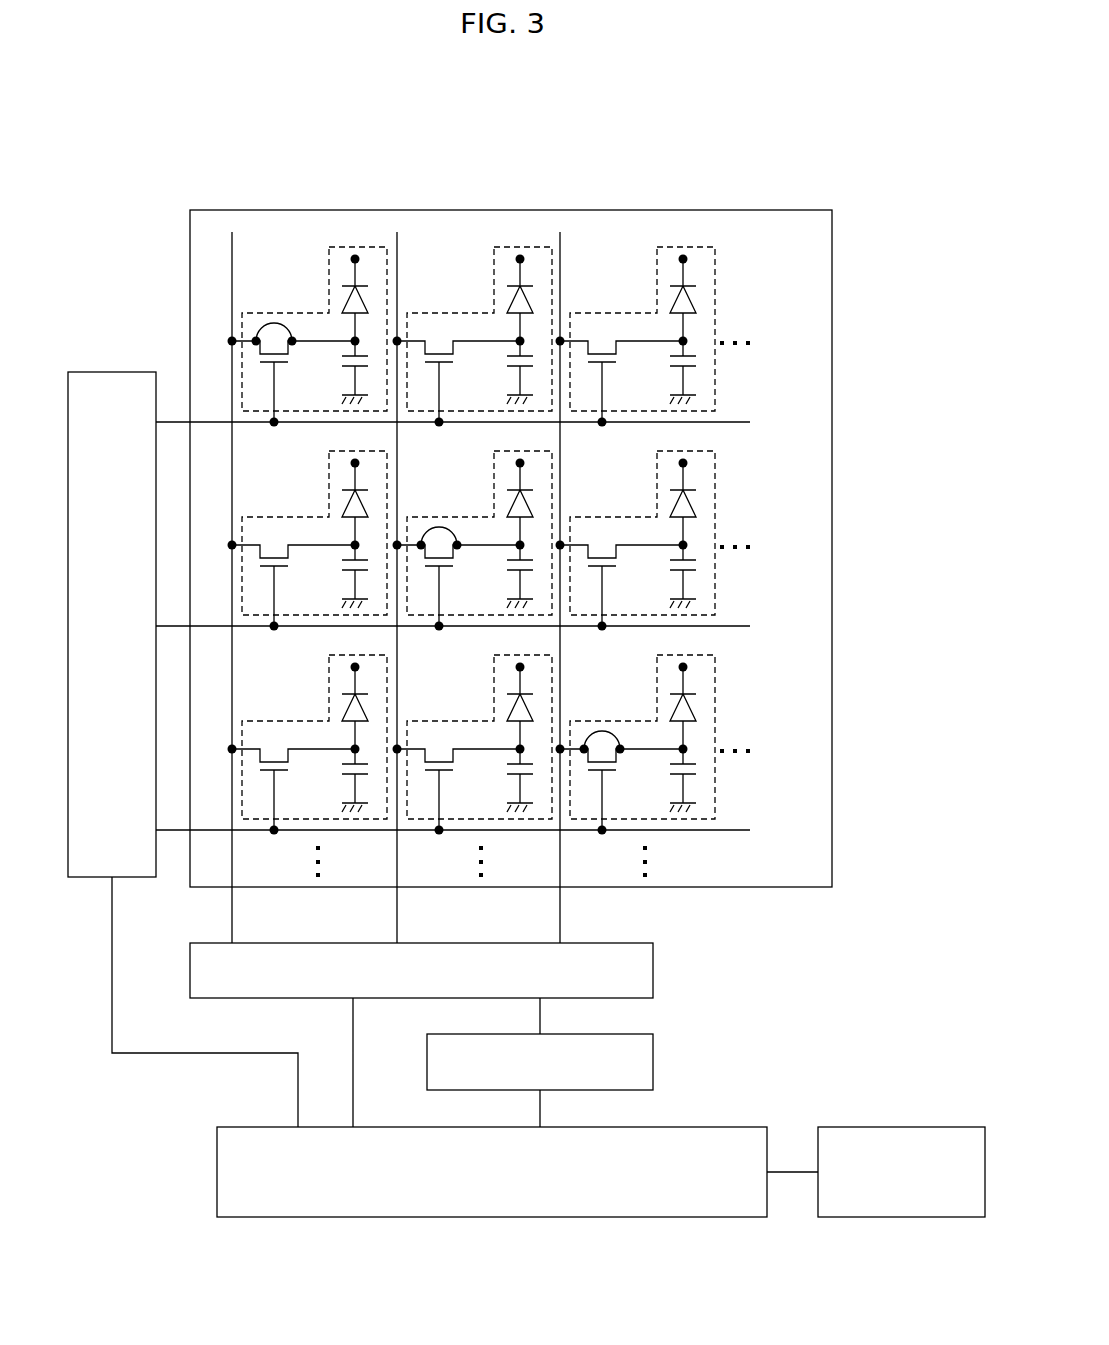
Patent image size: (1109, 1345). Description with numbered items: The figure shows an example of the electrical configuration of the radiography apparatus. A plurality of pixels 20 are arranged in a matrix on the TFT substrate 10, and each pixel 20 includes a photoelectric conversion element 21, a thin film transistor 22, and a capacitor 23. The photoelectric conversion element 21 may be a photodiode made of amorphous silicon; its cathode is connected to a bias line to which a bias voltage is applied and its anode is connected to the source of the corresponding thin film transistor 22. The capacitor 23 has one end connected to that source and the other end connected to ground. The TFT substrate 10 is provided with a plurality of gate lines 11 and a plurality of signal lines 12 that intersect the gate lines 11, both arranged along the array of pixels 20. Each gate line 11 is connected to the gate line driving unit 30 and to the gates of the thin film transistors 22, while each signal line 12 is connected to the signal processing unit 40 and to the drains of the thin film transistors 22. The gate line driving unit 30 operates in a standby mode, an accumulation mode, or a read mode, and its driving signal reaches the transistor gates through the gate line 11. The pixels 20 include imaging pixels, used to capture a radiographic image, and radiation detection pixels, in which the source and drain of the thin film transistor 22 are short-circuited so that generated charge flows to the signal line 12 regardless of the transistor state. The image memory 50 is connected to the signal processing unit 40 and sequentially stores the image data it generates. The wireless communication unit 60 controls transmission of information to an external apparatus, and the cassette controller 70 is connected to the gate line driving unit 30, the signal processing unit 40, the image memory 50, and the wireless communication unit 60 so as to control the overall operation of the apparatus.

The TFT substrate 10 is at (510, 210).
The gate line 11 is at (732, 421).
The signal line 12 is at (231, 917).
The pixel 20 is at (329, 268).
The photoelectric conversion element 21 is at (350, 316).
The thin film transistor 22 is at (287, 362).
The capacitor 23 is at (348, 378).
The gate line driving unit 30 is at (116, 372).
The signal processing unit 40 is at (655, 968).
The image memory 50 is at (642, 1034).
The wireless communication unit 60 is at (907, 1126).
The cassette controller 70 is at (693, 1126).